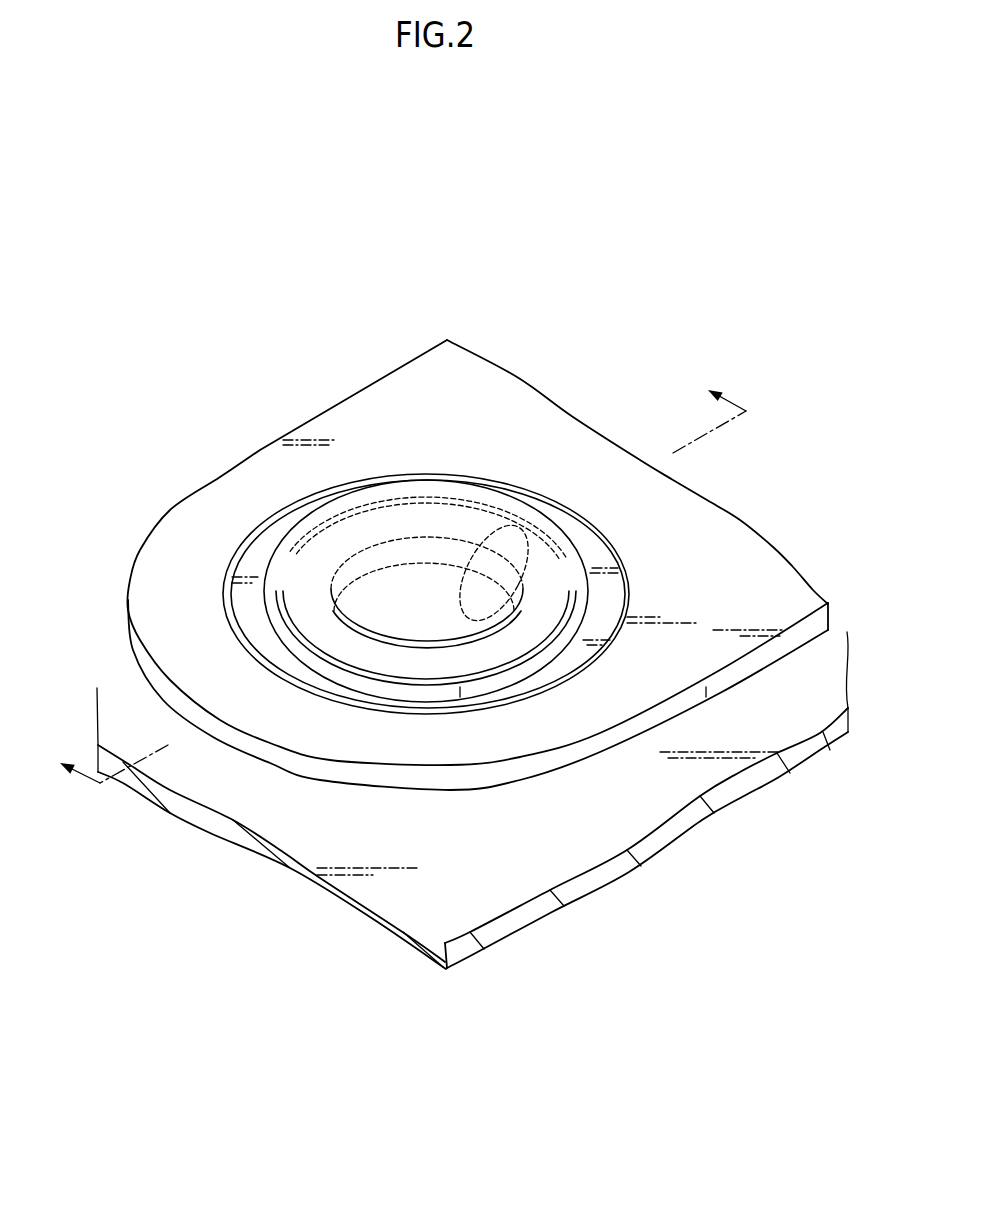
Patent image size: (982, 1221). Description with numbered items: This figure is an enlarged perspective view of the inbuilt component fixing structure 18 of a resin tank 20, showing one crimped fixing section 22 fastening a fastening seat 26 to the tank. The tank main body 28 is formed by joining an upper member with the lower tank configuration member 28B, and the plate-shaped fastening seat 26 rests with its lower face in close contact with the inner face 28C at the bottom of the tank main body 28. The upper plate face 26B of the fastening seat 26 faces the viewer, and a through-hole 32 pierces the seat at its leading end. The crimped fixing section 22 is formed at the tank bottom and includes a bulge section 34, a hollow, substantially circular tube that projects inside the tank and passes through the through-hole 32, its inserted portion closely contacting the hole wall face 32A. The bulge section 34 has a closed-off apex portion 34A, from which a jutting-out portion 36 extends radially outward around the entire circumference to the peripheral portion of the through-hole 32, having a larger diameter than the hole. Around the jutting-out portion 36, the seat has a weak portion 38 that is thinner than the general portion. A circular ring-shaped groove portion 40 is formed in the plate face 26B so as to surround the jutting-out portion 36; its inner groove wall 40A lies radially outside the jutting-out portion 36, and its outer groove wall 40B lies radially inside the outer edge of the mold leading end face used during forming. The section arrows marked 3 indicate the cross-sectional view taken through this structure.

The inbuilt component fixing structure 18 is at (477, 549).
The fastening seat 26 is at (347, 393).
The plate face 26B is at (233, 500).
The groove portion 40 is at (367, 662).
The groove wall 40A is at (500, 688).
The groove wall 40B is at (253, 548).
The through-hole 32 is at (514, 528).
The hole wall face 32A is at (730, 552).
The bulge section 34 is at (438, 521).
The apex portion 34A is at (426, 522).
The jutting-out portion 36 is at (340, 674).
The weak portion 38 is at (608, 600).
The crimped fixing section 22 is at (380, 660).
The resin tank 20 is at (472, 836).
The tank main body 28 is at (472, 836).
The tank configuration member 28B is at (500, 940).
The inner face 28C is at (400, 893).
The section line for FIG. 3 is at (407, 579).